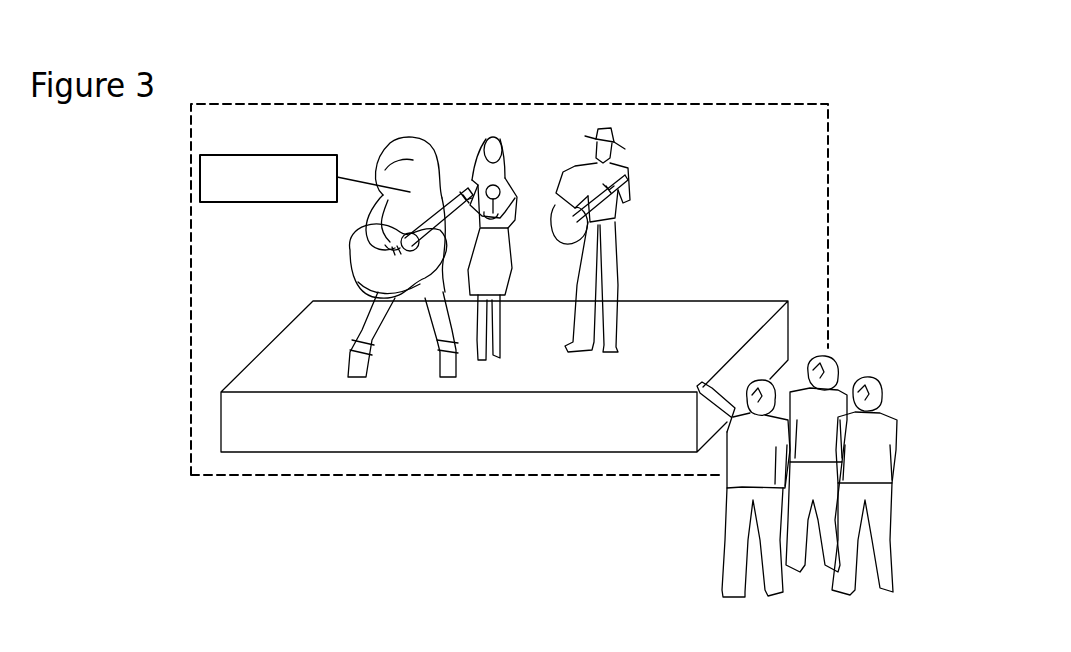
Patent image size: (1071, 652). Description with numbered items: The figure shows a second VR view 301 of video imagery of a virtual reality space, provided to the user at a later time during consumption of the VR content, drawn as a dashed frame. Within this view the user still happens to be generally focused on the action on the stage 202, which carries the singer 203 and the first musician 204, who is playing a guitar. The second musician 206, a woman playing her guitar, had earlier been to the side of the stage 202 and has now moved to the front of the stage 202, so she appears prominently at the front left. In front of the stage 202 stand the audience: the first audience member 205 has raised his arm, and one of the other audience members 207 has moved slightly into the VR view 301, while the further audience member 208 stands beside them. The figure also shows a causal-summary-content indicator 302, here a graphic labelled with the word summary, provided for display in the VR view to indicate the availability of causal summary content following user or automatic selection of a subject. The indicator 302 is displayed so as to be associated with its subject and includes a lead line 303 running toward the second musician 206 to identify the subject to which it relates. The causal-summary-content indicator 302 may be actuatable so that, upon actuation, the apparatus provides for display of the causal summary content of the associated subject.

The second VR view 301 is at (280, 104).
The causal-summary-content indicator 302 is at (225, 202).
The lead line 303 is at (353, 183).
The stage 202 is at (453, 426).
The singer 203 is at (493, 153).
The first musician 204 is at (610, 148).
The first audience member 205 is at (753, 442).
The second musician 206 is at (412, 158).
The other audience member 207 is at (835, 362).
The other audience member 208 is at (878, 390).